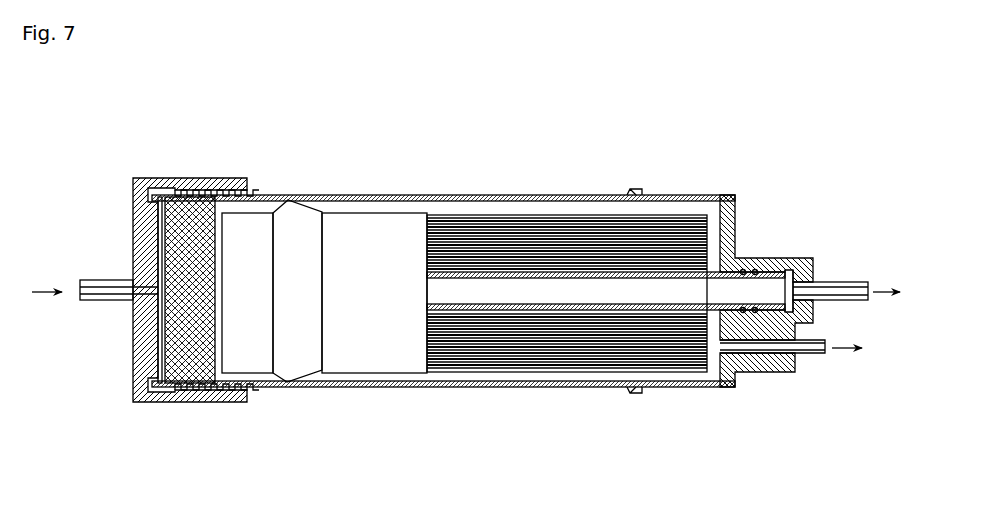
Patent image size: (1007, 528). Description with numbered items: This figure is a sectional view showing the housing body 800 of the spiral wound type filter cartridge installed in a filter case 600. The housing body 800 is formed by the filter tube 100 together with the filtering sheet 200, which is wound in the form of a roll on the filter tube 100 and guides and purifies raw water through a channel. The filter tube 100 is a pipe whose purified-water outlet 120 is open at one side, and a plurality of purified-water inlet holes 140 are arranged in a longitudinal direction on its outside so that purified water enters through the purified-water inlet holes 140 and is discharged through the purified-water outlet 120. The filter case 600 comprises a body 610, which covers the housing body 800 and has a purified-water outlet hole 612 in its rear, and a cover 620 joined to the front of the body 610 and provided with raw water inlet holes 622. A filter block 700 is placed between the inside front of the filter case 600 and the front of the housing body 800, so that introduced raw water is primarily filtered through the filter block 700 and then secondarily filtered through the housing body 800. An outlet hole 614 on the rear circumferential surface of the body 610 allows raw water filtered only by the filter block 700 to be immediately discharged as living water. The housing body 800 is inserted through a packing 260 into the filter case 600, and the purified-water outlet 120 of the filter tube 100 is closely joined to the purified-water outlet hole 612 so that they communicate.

The filter tube 100 is at (605, 304).
The purified-water outlet 120 is at (777, 287).
The purified-water inlet holes 140 is at (508, 276).
The filtering sheet 200 is at (473, 216).
The packing 260 is at (295, 215).
The filter case 600 is at (738, 191).
The body 610 is at (682, 194).
The purified-water outlet hole 612 is at (840, 283).
The outlet hole 614 is at (812, 354).
The cover 620 is at (205, 178).
The raw water inlet holes 622 is at (100, 300).
The filter block 700 is at (200, 345).
The housing body 800 is at (370, 215).